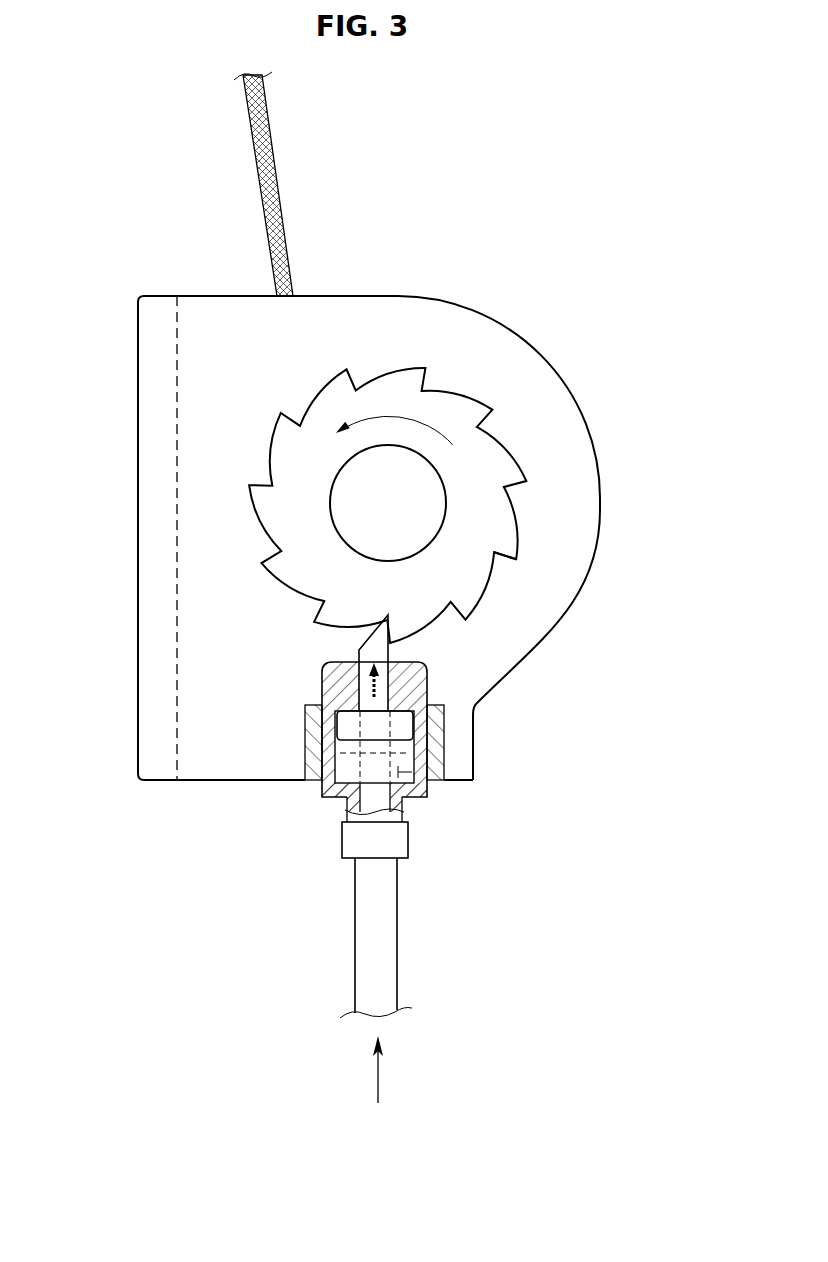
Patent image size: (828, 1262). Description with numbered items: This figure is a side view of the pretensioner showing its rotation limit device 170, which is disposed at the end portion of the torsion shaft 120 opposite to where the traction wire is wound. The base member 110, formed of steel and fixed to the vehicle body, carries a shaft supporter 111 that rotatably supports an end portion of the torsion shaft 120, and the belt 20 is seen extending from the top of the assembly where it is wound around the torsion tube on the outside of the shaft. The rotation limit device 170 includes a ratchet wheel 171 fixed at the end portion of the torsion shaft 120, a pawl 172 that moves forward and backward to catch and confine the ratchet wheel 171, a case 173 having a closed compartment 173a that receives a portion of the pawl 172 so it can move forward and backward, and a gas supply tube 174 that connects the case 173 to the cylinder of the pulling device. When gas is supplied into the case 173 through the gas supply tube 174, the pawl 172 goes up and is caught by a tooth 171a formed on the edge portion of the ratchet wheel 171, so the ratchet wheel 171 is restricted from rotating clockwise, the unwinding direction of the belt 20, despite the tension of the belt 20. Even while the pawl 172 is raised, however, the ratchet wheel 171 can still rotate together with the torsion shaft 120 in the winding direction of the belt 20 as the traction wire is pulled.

The belt 20 is at (280, 183).
The base member 110 is at (145, 661).
The shaft supporter 111 is at (480, 333).
The rotation limit device 170 is at (588, 466).
The ratchet wheel 171 is at (278, 462).
The tooth 171a is at (505, 558).
The torsion shaft 120 is at (425, 512).
The pawl 172 is at (357, 655).
The case 173 is at (422, 737).
The closed compartment 173a is at (412, 776).
The gas supply tube 174 is at (388, 920).